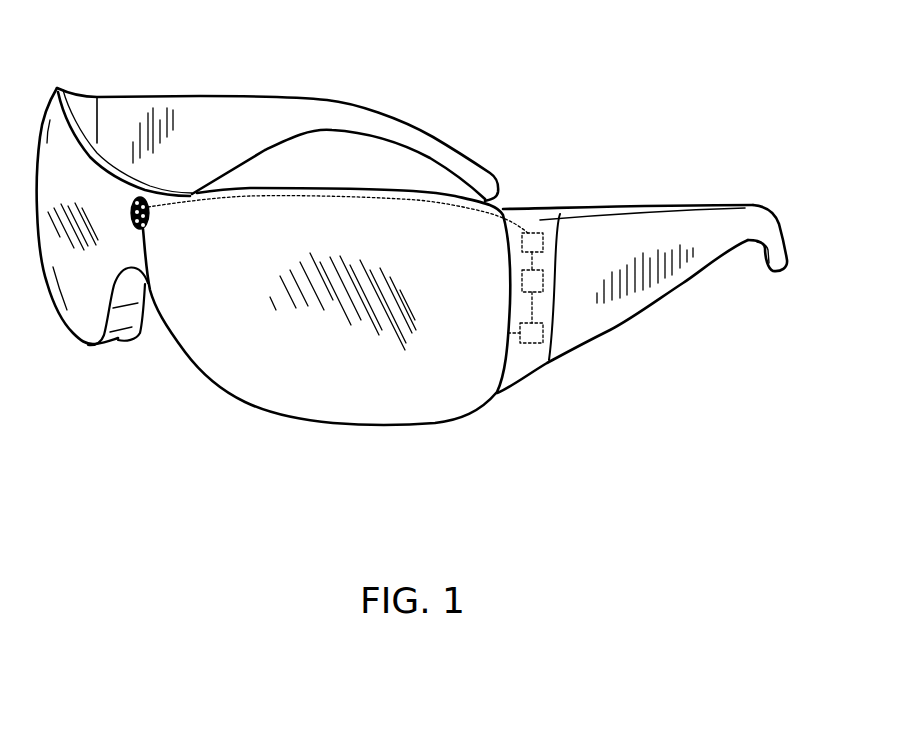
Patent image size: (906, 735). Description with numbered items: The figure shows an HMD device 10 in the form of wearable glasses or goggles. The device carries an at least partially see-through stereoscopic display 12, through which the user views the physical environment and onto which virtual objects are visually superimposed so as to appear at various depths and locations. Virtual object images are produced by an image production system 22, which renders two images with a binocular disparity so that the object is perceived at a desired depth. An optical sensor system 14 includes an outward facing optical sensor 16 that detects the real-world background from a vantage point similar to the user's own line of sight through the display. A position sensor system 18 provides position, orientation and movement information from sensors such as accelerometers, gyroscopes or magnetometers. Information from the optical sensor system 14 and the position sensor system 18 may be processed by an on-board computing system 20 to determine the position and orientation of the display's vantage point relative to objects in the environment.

The HMD device 10 is at (478, 79).
The at least partially see-through stereoscopic display 12 is at (295, 340).
The optical sensor system 14 is at (152, 181).
The outward facing optical sensor 16 is at (149, 297).
The position sensor system 18 is at (537, 280).
The on-board computing system 20 is at (536, 240).
The image production system 22 is at (533, 333).